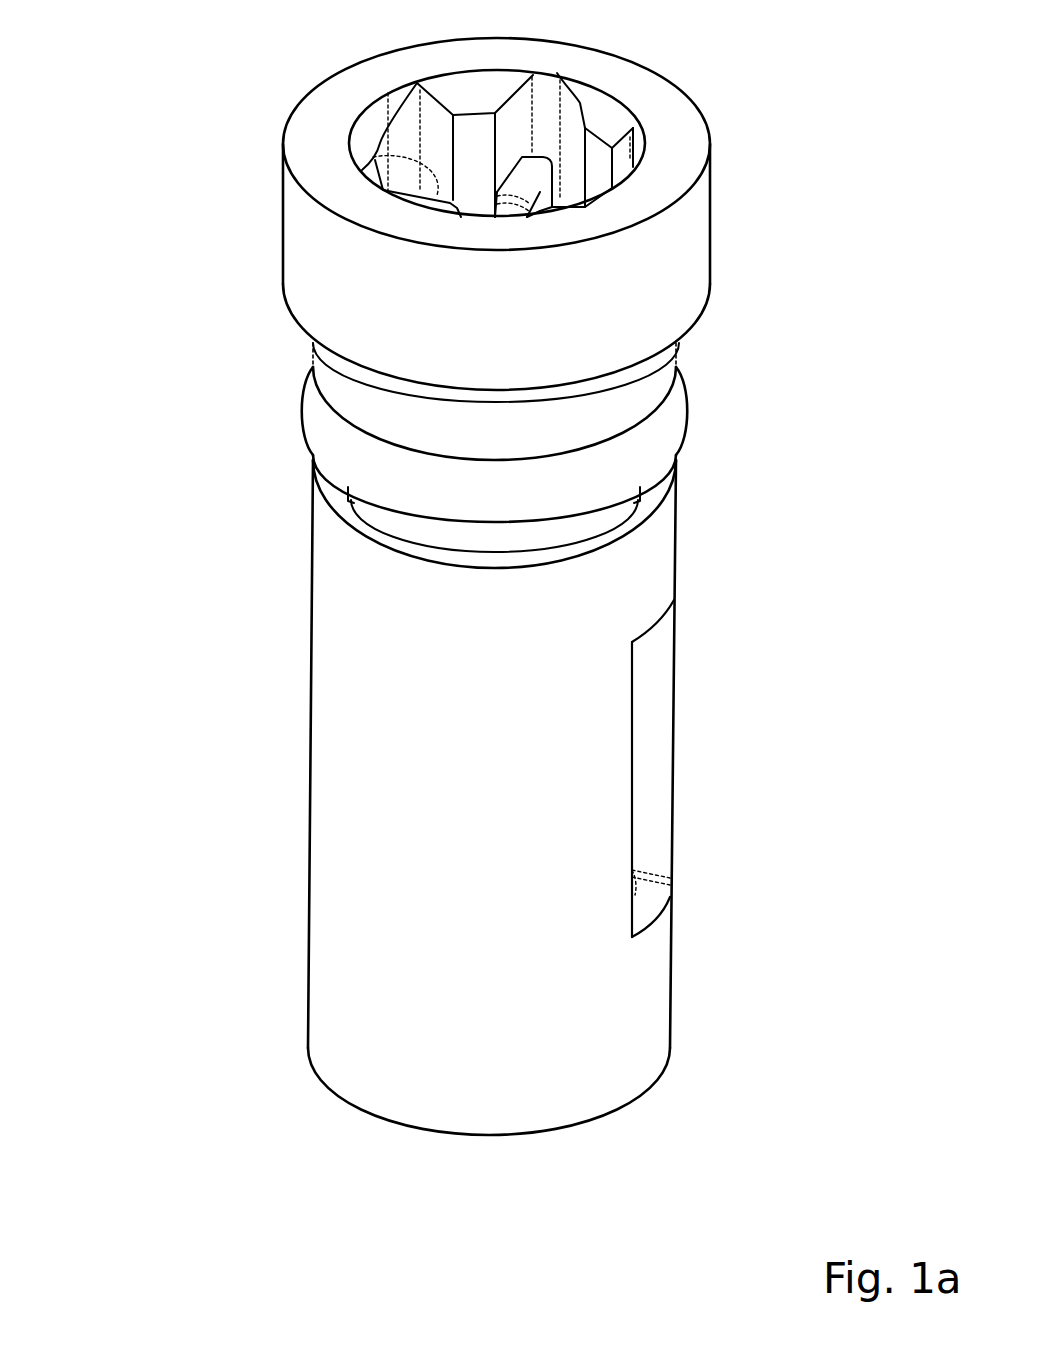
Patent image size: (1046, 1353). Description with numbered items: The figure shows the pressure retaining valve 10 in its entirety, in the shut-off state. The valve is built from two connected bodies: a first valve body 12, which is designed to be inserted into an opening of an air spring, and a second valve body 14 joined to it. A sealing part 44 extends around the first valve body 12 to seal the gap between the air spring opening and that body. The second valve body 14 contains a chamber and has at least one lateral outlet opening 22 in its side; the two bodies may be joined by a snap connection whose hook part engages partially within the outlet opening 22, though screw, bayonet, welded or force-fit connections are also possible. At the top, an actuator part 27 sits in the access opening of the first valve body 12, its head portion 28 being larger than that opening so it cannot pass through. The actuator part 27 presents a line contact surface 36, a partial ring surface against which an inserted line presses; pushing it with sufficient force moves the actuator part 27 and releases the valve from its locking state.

The pressure retaining valve 10 is at (262, 130).
The first valve body 12 is at (667, 277).
The second valve body 14 is at (612, 1027).
The lateral outlet opening 22 is at (650, 795).
The actuator part 27 is at (522, 175).
The head portion 28 is at (540, 193).
The line contact surface 36 is at (513, 163).
The sealing part 44 is at (660, 432).